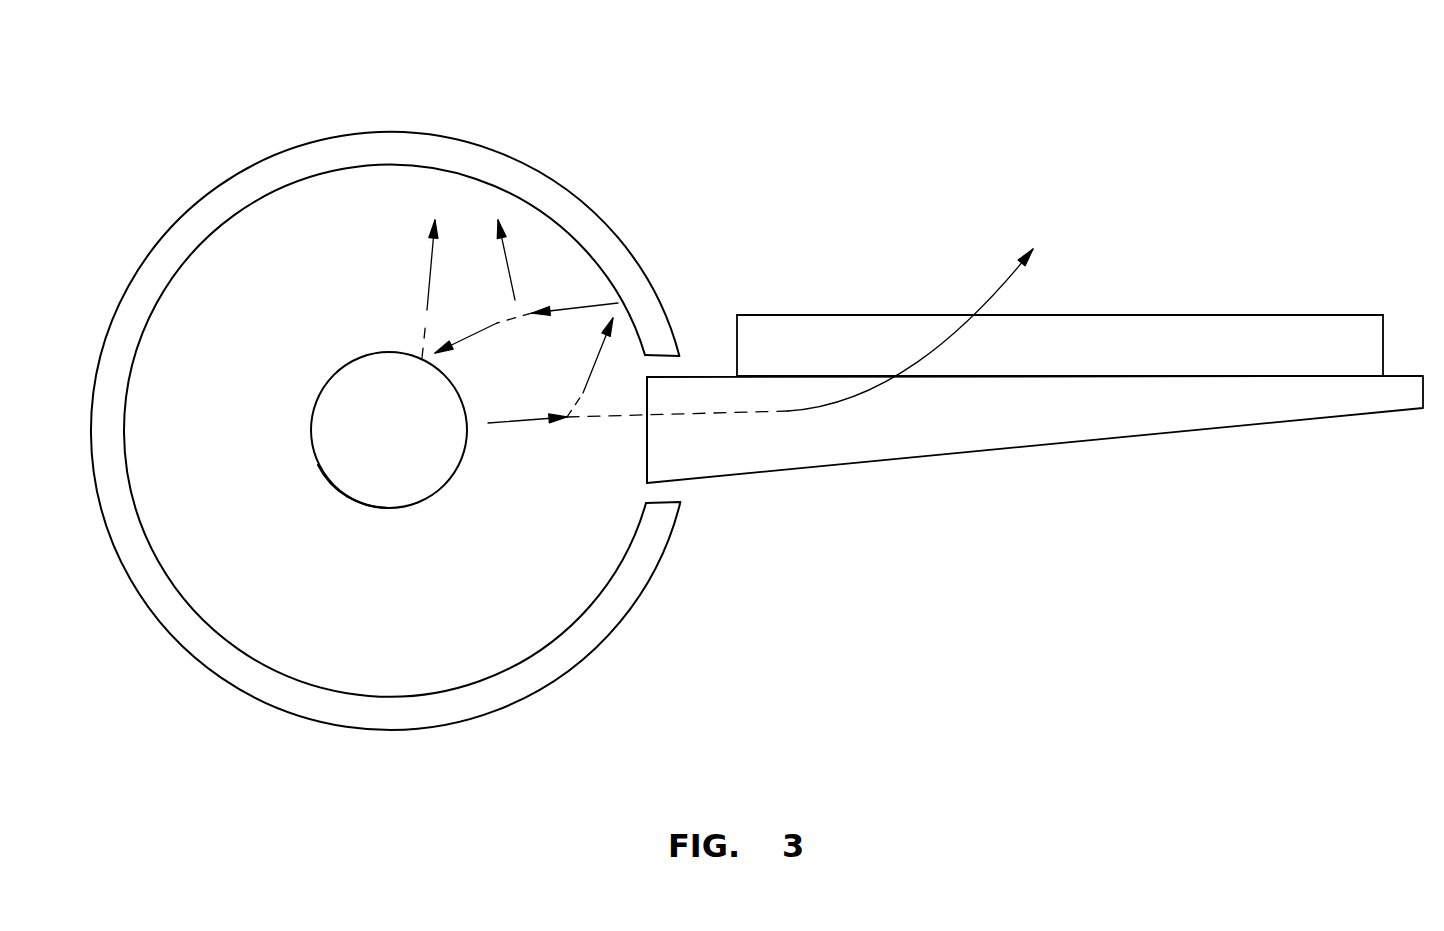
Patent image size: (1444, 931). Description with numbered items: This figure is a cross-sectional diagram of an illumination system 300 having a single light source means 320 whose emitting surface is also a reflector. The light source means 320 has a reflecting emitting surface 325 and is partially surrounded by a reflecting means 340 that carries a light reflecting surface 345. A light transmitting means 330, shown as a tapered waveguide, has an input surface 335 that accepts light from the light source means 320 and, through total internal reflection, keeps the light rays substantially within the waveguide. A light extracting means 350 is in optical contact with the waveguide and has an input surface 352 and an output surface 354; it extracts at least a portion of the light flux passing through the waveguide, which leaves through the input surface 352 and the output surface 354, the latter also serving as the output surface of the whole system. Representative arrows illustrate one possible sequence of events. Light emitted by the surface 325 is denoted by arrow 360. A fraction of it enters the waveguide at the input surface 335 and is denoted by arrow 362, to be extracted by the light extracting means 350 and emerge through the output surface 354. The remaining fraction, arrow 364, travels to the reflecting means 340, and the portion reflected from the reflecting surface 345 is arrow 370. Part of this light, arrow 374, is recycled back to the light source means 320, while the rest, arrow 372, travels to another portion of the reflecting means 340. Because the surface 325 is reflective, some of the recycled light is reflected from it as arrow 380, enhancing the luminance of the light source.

The illumination system 300 is at (988, 103).
The light source means 320 is at (363, 471).
The reflecting emitting surface 325 is at (318, 465).
The light transmitting means 330 is at (1035, 439).
The input surface 335 is at (647, 449).
The reflecting means 340 is at (385, 465).
The light reflecting surface 345 is at (533, 652).
The light extracting means 350 is at (1060, 316).
The input surface 352 is at (1174, 374).
The output surface 354 is at (1142, 314).
The arrow 360 is at (503, 424).
The arrow 362 is at (922, 309).
The arrow 364 is at (591, 373).
The arrow 370 is at (587, 307).
The arrow 372 is at (509, 272).
The arrow 374 is at (480, 331).
The arrow 380 is at (431, 262).